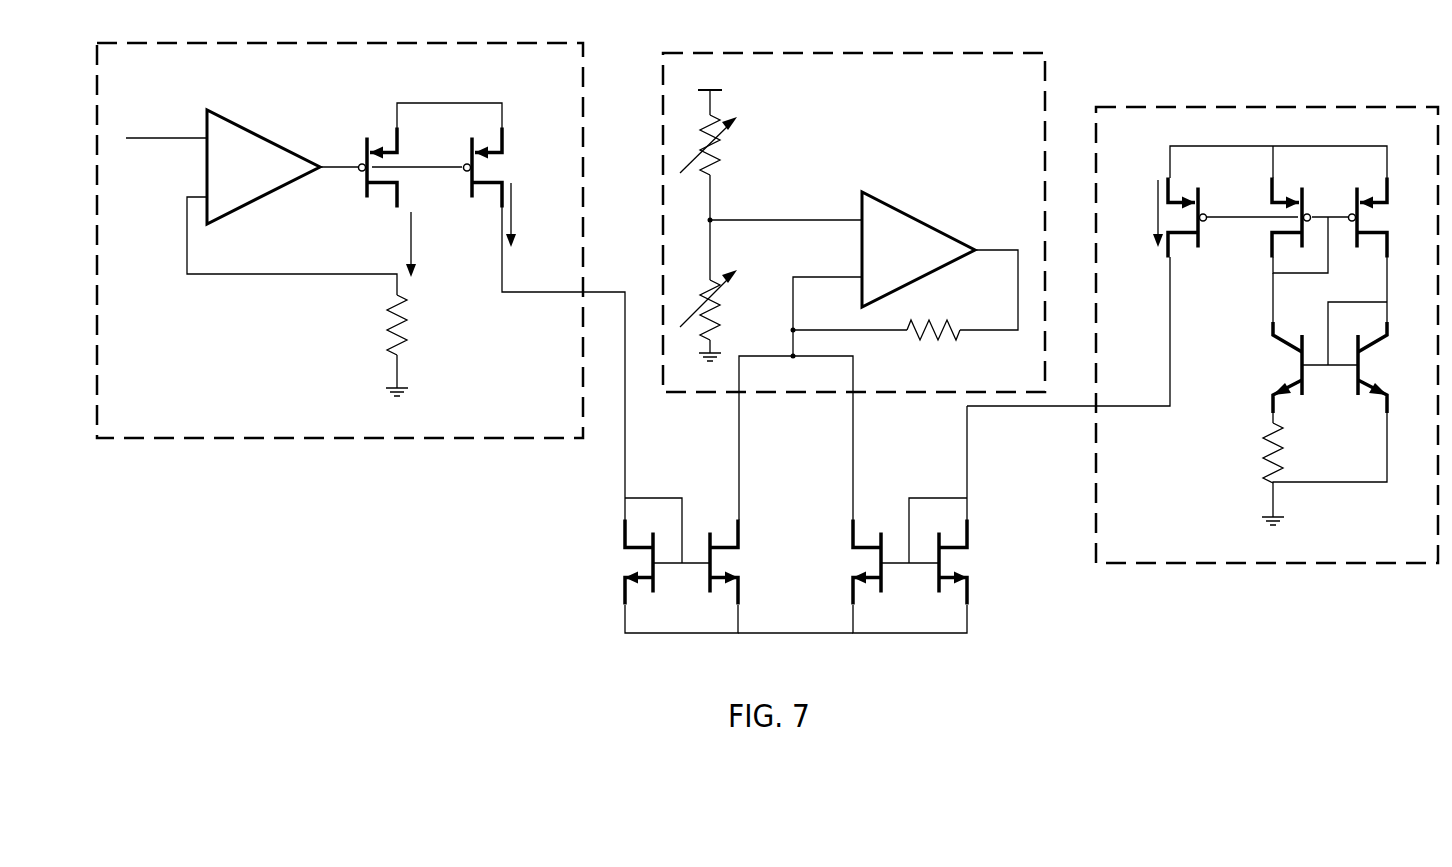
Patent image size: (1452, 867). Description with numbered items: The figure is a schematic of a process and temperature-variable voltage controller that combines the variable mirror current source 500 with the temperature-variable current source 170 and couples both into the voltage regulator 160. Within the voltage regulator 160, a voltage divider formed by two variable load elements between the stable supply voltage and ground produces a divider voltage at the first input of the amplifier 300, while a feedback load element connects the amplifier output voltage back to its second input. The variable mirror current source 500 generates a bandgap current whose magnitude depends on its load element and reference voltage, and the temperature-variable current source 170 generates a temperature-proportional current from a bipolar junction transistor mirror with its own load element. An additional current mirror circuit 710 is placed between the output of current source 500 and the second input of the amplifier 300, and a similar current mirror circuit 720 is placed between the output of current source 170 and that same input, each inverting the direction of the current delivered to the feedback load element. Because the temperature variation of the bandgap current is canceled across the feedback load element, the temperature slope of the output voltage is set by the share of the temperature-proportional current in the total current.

The variable mirror current source 500 is at (544, 422).
The voltage regulator 160 is at (1021, 383).
The amplifier 300 is at (903, 218).
The temperature-variable current source 170 is at (1415, 549).
The additional current mirror circuit 710 is at (599, 621).
The additional current mirror circuit 720 is at (1003, 626).